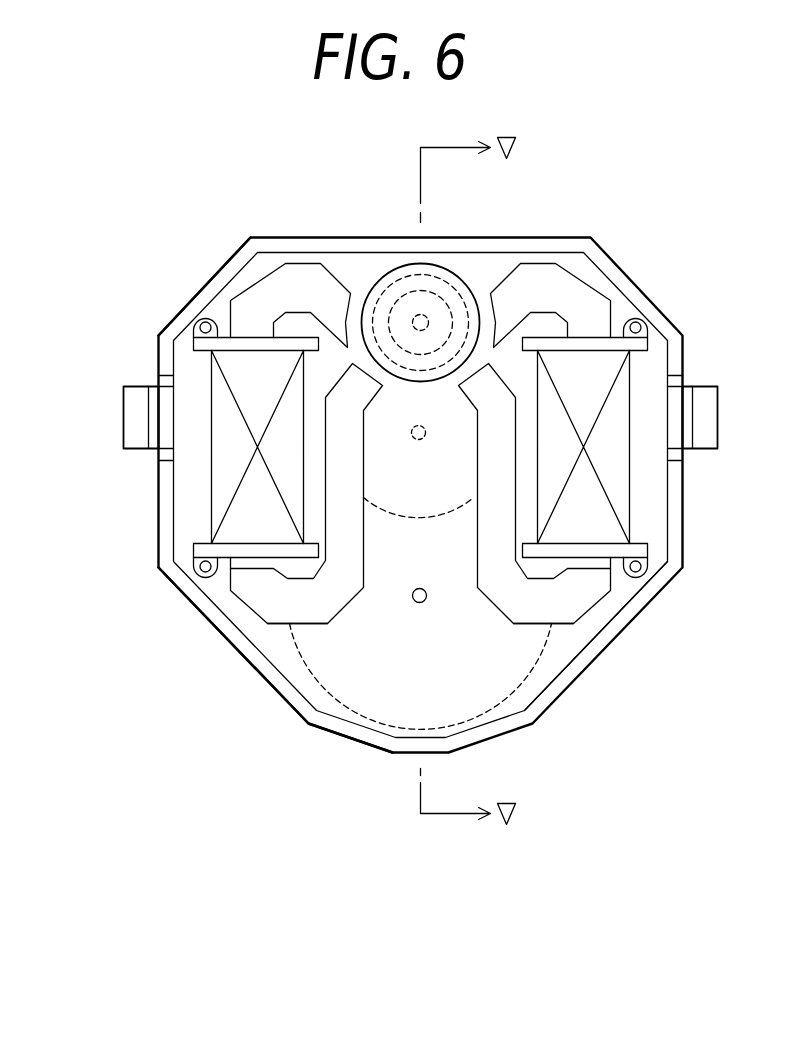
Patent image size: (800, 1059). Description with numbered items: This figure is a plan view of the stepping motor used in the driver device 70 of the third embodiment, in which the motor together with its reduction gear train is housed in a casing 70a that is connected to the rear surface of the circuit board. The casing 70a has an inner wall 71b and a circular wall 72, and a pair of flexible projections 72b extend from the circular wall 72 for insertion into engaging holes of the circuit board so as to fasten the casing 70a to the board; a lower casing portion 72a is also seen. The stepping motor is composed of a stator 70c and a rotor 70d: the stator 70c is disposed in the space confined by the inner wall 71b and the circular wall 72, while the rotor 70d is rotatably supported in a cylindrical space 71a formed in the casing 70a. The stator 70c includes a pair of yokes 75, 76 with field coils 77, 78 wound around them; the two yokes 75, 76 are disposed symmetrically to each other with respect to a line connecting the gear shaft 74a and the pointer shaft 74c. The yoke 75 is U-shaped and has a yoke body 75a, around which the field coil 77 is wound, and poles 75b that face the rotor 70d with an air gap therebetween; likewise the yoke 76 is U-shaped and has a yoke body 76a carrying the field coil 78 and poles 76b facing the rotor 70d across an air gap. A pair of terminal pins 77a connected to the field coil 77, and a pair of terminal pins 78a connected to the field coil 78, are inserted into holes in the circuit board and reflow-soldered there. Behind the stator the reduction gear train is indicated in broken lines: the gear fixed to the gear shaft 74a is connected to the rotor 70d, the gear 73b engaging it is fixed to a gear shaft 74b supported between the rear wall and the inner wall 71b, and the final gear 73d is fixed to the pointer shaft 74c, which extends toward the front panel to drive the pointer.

The driver device 70 is at (651, 260).
The casing 70a is at (334, 746).
The stator 70c is at (250, 260).
The rotor 70d is at (390, 302).
The cylindrical space 71a is at (368, 290).
The inner wall 71b is at (610, 600).
The circular wall 72 is at (507, 727).
The case bottom wall 72a is at (302, 716).
The flexible projections 72b is at (122, 427).
The gear 73b is at (433, 520).
The gear 73d is at (372, 723).
The gear shaft 74a is at (452, 300).
The gear shaft 74b is at (423, 438).
The pointer shaft 74c is at (413, 603).
The yoke 75 is at (525, 607).
The yoke body 75a is at (553, 612).
The poles 75b is at (512, 295).
The yoke 76 is at (262, 574).
The yoke body 76a is at (290, 613).
The poles 76b is at (327, 295).
The field coil 77 is at (618, 490).
The terminal pins 77a is at (638, 320).
The field coil 78 is at (220, 480).
The terminal pins 78a is at (203, 315).